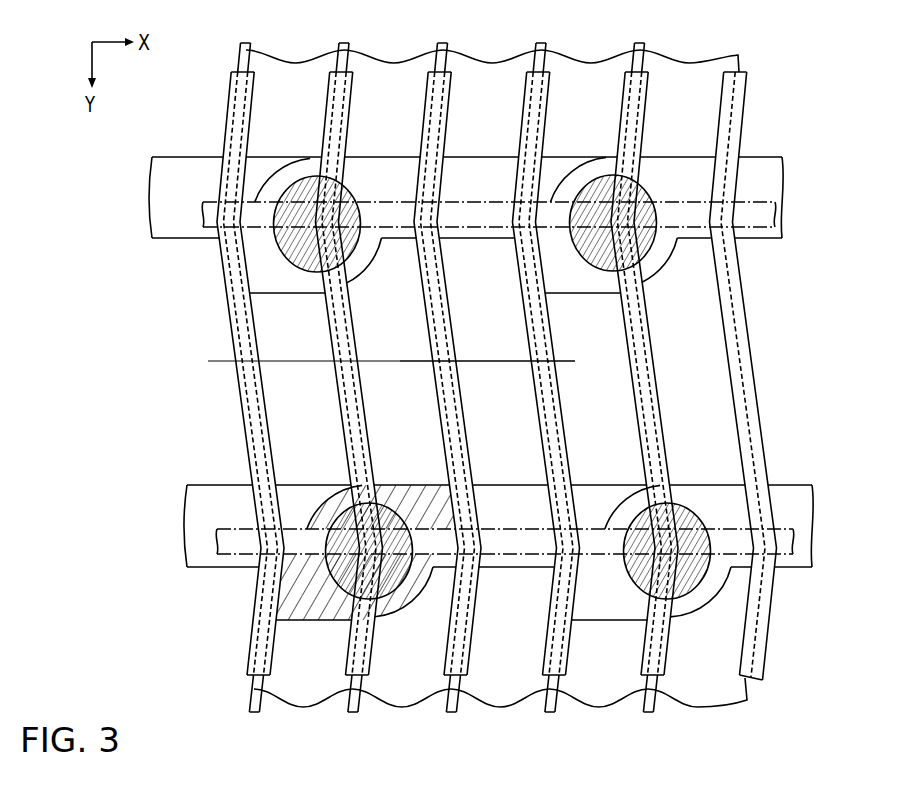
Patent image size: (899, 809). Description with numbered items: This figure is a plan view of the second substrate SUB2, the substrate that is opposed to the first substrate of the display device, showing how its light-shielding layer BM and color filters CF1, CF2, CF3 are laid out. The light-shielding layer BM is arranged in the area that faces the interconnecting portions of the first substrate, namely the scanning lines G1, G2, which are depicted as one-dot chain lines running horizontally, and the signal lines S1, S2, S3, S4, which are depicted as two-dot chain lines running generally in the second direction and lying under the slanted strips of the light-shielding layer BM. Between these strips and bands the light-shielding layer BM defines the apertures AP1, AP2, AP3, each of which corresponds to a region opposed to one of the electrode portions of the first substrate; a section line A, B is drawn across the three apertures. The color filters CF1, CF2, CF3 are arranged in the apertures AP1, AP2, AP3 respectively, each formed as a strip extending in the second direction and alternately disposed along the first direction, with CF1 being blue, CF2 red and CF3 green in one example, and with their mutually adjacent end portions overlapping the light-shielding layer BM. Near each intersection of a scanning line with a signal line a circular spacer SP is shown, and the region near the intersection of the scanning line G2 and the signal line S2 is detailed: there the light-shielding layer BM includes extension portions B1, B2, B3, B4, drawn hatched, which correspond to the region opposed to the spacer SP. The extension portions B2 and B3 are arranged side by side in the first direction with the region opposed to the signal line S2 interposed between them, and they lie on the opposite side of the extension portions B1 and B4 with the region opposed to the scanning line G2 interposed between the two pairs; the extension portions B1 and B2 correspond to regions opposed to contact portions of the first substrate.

The second substrate SUB2 is at (807, 84).
The spacer SP is at (652, 198).
The scanning line G1 is at (777, 213).
The scanning line G2 is at (795, 542).
The light-shielding layer BM is at (816, 479).
The aperture AP1 is at (300, 389).
The aperture AP2 is at (412, 361).
The aperture AP3 is at (493, 361).
The extension portion B1 is at (322, 587).
The extension portion B2 is at (412, 507).
The extension portion B3 is at (350, 489).
The extension portion B4 is at (430, 569).
The signal line S1 is at (252, 714).
The signal line S2 is at (351, 714).
The signal line S3 is at (449, 714).
The signal line S4 is at (548, 714).
The first color filter CF1 is at (301, 701).
The second color filter CF2 is at (400, 701).
The third color filter CF3 is at (497, 701).
The cross-section line end A is at (384, 360).
The cross-section line end B is at (495, 360).